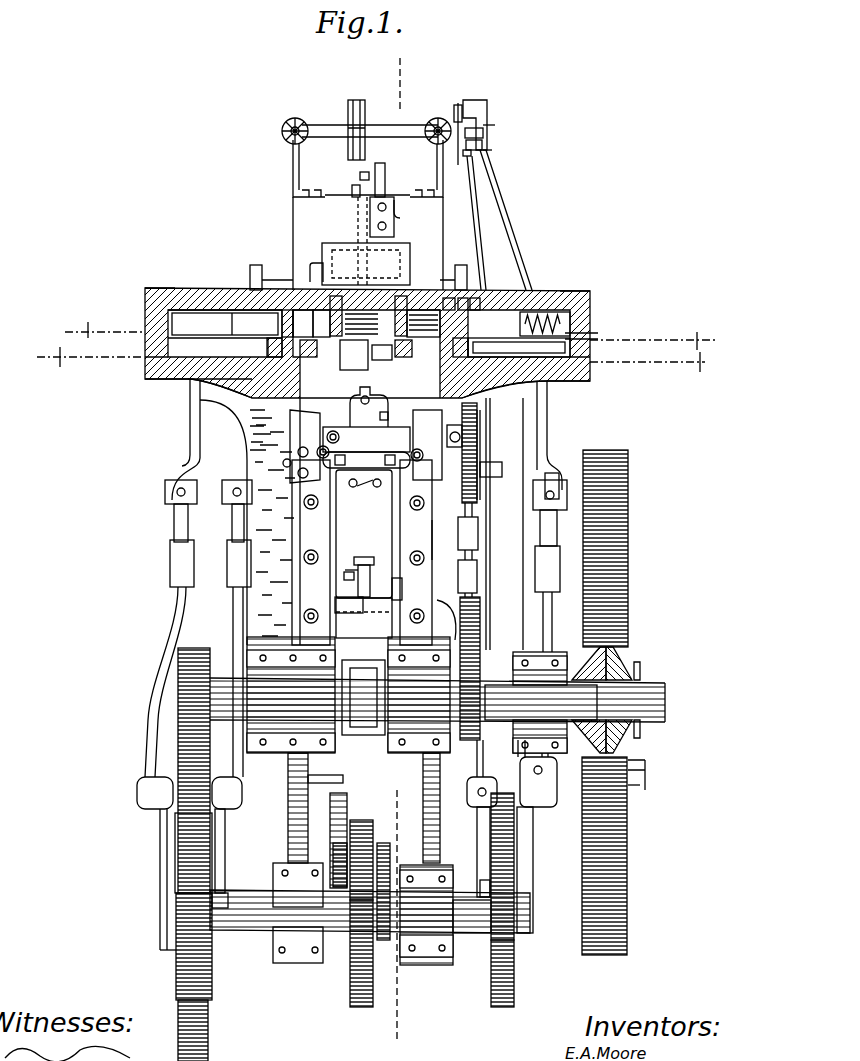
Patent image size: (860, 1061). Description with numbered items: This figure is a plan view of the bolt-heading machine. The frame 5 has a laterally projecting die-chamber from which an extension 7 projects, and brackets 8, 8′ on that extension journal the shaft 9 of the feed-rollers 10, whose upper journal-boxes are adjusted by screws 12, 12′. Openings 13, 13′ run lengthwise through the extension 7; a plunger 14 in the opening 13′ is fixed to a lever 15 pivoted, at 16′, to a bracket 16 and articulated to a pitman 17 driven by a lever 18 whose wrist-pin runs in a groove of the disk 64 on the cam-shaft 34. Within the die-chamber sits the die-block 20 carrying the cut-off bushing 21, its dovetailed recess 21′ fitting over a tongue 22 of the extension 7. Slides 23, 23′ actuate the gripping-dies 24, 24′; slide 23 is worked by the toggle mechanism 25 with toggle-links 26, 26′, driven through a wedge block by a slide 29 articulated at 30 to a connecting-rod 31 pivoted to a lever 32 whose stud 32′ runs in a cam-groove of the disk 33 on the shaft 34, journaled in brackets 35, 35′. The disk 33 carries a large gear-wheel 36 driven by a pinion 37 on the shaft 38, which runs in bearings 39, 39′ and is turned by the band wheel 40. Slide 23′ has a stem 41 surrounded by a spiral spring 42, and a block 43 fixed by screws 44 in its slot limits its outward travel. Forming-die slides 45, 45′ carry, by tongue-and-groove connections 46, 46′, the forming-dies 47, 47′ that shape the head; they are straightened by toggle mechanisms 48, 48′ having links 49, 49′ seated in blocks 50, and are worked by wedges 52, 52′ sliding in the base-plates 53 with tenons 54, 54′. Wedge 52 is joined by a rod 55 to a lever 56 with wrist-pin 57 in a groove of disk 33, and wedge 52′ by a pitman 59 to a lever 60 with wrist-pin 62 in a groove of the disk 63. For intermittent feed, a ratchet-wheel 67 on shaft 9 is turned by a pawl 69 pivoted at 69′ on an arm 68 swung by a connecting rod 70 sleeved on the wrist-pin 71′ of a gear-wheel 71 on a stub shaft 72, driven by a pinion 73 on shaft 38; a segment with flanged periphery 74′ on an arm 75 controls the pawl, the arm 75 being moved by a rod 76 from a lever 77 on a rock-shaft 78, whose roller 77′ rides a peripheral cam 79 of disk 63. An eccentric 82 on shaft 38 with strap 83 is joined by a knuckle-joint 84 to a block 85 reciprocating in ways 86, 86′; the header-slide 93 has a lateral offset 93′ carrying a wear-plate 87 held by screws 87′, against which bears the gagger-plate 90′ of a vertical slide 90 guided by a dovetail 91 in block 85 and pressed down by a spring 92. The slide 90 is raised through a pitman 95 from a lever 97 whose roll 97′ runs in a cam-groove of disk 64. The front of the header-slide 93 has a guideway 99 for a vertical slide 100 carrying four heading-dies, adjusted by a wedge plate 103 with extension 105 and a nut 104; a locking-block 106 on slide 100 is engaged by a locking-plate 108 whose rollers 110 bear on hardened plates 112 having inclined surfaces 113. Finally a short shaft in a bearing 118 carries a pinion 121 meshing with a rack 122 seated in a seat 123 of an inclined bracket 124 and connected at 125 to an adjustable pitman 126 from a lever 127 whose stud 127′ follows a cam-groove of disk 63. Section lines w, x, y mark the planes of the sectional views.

The frame 5 is at (275, 530).
The extension 7 is at (368, 242).
The bracket 8 is at (293, 166).
The bracket 8′ is at (437, 158).
The shaft 9 is at (400, 125).
The feed-roller 10 is at (348, 110).
The screw 12 is at (295, 118).
The screw 12′ is at (438, 118).
The perforation 13 is at (358, 240).
The perforation 13′ is at (352, 192).
The plunger 14 is at (368, 172).
The lever 15 is at (385, 172).
The bracket 16 is at (394, 224).
The link 16′ is at (400, 206).
The pitman 17 is at (423, 800).
The lever 18 is at (364, 869).
The die-block 20 is at (377, 257).
The cut-off bushing 21 is at (300, 282).
The recess 21′ is at (316, 263).
The tongue 22 is at (400, 260).
The slide 23 is at (298, 323).
The slide 23′ is at (376, 316).
The gripping-die 24 is at (316, 300).
The gripping-die 24′ is at (405, 300).
The toggle mechanism 25 is at (200, 381).
The toggle-link 26 is at (150, 315).
The toggle-link 26′ is at (248, 312).
The slide 29 is at (250, 450).
The articulation 30 is at (192, 530).
The connecting-rod 31 is at (232, 522).
The lever 32 is at (225, 838).
The stud 32′ is at (228, 862).
The disk 33 is at (212, 978).
The cam-shaft 34 is at (248, 935).
The bracket 35 is at (295, 963).
The bracket 35′ is at (432, 965).
The gear-wheel 36 is at (176, 945).
The pinion 37 is at (178, 690).
The shaft 38 is at (665, 700).
The bearing 39 is at (291, 695).
The bearing 39′ is at (419, 695).
The band wheel 40 is at (628, 612).
The stem 41 is at (570, 323).
The spiral spring 42 is at (598, 336).
The block 43 is at (478, 300).
The screws 44 is at (466, 300).
The forming-die slide 45 is at (285, 349).
The forming-die slide 45′ is at (446, 348).
The tongue-and-groove connection 46 is at (312, 360).
The tongue-and-groove connection 46′ is at (404, 367).
The forming-die 47 is at (354, 362).
The forming-die 47′ is at (382, 362).
The toggle mechanism 48 is at (225, 348).
The toggle mechanism 48′ is at (519, 348).
The link 49 is at (590, 368).
The link 49′ is at (520, 388).
The socket block 50 is at (590, 352).
The wedge 52 is at (197, 450).
The wedge 52′ is at (547, 430).
The base-plate 53 is at (578, 291).
The tenon 54 is at (190, 398).
The tenon 54′ is at (547, 395).
The pitman 55 is at (168, 640).
The lever 56 is at (160, 828).
The wrist-pin 57 is at (175, 857).
The pitman 59 is at (554, 566).
The lever 60 is at (533, 845).
The wrist-pin 62 is at (514, 870).
The disk 63 is at (514, 962).
The disk 64 is at (358, 1007).
The ratchet-wheel 67 is at (458, 103).
The arm 68 is at (482, 144).
The pawl 69 is at (483, 131).
The pivot 69′ is at (492, 152).
The connecting rod 70 is at (471, 200).
The gear-wheel 71 is at (437, 615).
The wrist-pin 71′ is at (480, 615).
The stub shaft 72 is at (400, 620).
The pinion 73 is at (541, 702).
The flanged periphery 74′ is at (495, 128).
The arm 75 is at (476, 100).
The connecting rod 76 is at (500, 190).
The lever 77 is at (628, 766).
The antifriction-roller 77′ is at (630, 790).
The rock-shaft 78 is at (480, 795).
The cam 79 is at (540, 807).
The eccentric 82 is at (300, 765).
The strap 83 is at (308, 779).
The knuckle-joint 84 is at (335, 603).
The block 85 is at (405, 582).
The way 86 is at (306, 540).
The way 86′ is at (423, 540).
The wear-plate 87 is at (416, 552).
The screws 87′ is at (364, 534).
The vertical slide 90 is at (368, 569).
The gagger-plate 90′ is at (361, 543).
The dovetail guide 91 is at (345, 570).
The spring 92 is at (344, 576).
The header-slide 93 is at (292, 485).
The lateral offset 93′ is at (428, 540).
The pitman 95 is at (332, 815).
The lever 97 is at (333, 850).
The antifriction-roll 97′ is at (290, 863).
The guideway 99 is at (334, 431).
The slide 100 is at (366, 439).
The plate 103 is at (283, 410).
The nut 104 is at (369, 408).
The lateral extension 105 is at (375, 400).
The locking-block 106 is at (365, 483).
The locking-plate 108 is at (347, 462).
The antifriction-roller 110 is at (366, 446).
The hardened-steel plate 112 is at (356, 443).
The inclined surface 113 is at (367, 459).
The bearing 118 is at (462, 490).
The pinion 121 is at (462, 440).
The rack 122 is at (480, 495).
The seat 123 is at (502, 470).
The inclined bracket 124 is at (565, 486).
The connection 125 is at (478, 537).
The pitman 126 is at (477, 575).
The lever 127 is at (477, 840).
The wrist-pin 127′ is at (480, 862).
The section line w is at (394, 547).
The section line x is at (366, 359).
The section line y is at (383, 337).